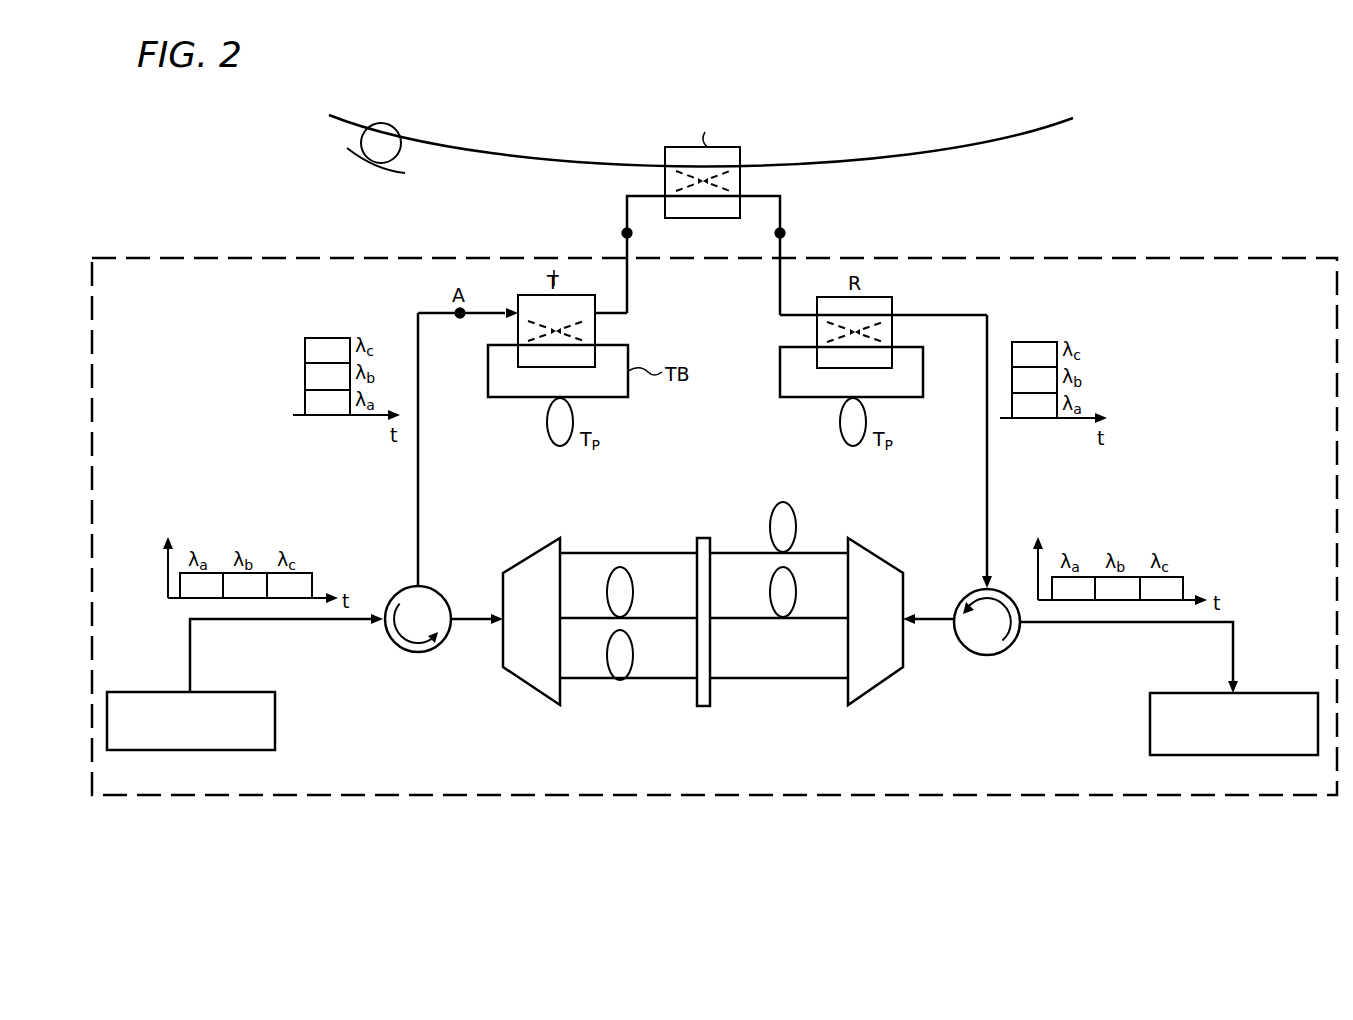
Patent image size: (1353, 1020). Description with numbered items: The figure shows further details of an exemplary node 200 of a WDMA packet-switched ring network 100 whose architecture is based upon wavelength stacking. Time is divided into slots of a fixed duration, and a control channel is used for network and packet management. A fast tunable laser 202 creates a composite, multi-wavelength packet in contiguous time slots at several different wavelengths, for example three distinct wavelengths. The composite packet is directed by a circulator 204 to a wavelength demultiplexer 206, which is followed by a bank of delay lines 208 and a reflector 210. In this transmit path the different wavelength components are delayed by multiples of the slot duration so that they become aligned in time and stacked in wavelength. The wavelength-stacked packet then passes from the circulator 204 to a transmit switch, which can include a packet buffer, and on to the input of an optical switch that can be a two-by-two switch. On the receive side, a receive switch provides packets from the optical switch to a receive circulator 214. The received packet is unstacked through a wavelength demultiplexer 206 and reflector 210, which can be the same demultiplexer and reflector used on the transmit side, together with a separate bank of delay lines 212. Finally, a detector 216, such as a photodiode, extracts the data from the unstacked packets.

The WDMA packet-switched ring network 100 is at (802, 127).
The node 200 is at (252, 158).
The fast tunable laser 202 is at (275, 731).
The circulator 204 is at (418, 652).
The wavelength demultiplexer 206 is at (530, 562).
The bank of delay lines 208 is at (697, 708).
The reflector 210 is at (706, 538).
The bank of delay lines 212 is at (848, 708).
The receive circulator 214 is at (987, 655).
The detector 216 is at (1150, 724).